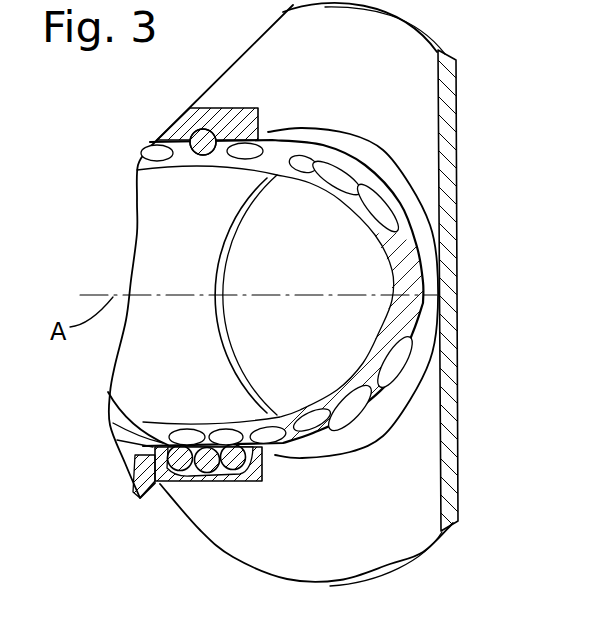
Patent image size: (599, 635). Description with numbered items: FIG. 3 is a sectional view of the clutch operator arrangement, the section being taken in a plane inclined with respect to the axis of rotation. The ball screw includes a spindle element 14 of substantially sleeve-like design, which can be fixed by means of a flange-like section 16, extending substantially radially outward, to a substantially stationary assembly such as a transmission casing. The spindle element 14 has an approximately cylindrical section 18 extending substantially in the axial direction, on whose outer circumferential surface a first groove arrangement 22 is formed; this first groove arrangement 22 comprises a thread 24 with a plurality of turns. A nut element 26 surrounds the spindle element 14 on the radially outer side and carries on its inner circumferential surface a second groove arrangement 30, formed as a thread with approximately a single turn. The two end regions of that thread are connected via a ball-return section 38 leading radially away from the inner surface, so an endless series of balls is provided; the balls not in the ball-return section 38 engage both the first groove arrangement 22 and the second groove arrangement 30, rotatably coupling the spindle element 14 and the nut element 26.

The spindle element 14 is at (416, 109).
The flange-like section 16 is at (457, 347).
The cylindrical section 18 is at (140, 166).
The first groove arrangement 22 is at (390, 333).
The thread 24 is at (352, 400).
The nut element 26 is at (167, 483).
The second groove arrangement 30 is at (219, 135).
The ball-return section 38 is at (190, 480).